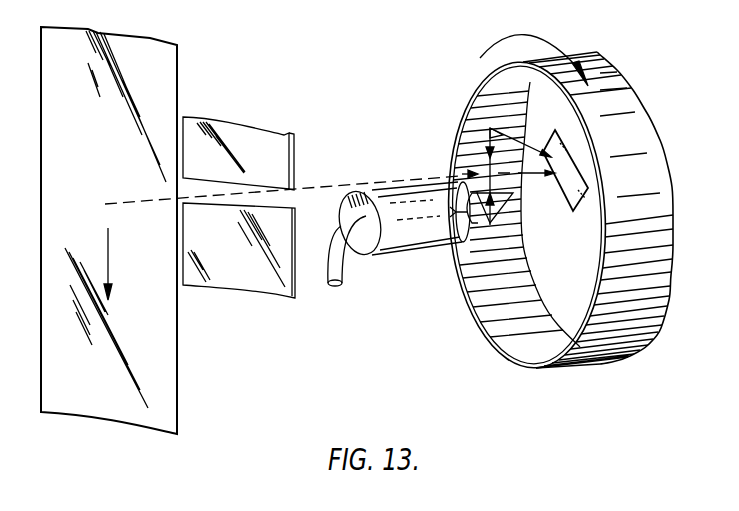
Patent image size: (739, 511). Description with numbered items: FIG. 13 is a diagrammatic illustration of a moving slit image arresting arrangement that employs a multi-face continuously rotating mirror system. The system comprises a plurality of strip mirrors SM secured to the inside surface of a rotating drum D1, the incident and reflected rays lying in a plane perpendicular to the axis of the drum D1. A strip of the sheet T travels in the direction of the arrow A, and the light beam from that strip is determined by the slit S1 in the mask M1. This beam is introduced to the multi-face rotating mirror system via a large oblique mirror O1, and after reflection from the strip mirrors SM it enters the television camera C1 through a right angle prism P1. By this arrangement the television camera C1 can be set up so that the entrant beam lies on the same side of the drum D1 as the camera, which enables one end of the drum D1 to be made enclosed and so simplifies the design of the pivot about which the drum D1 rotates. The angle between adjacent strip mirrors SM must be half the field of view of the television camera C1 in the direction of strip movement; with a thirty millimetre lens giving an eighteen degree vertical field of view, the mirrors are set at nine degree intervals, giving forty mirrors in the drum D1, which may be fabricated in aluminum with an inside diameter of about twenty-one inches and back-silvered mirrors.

The sheet T is at (116, 169).
The arrow A is at (113, 264).
The mask M1 is at (263, 142).
The slit S1 is at (272, 202).
The television camera C1 is at (410, 254).
The right angle prism P1 is at (513, 211).
The large oblique mirror O1 is at (552, 141).
The strip mirrors SM is at (476, 98).
The drum D1 is at (577, 357).